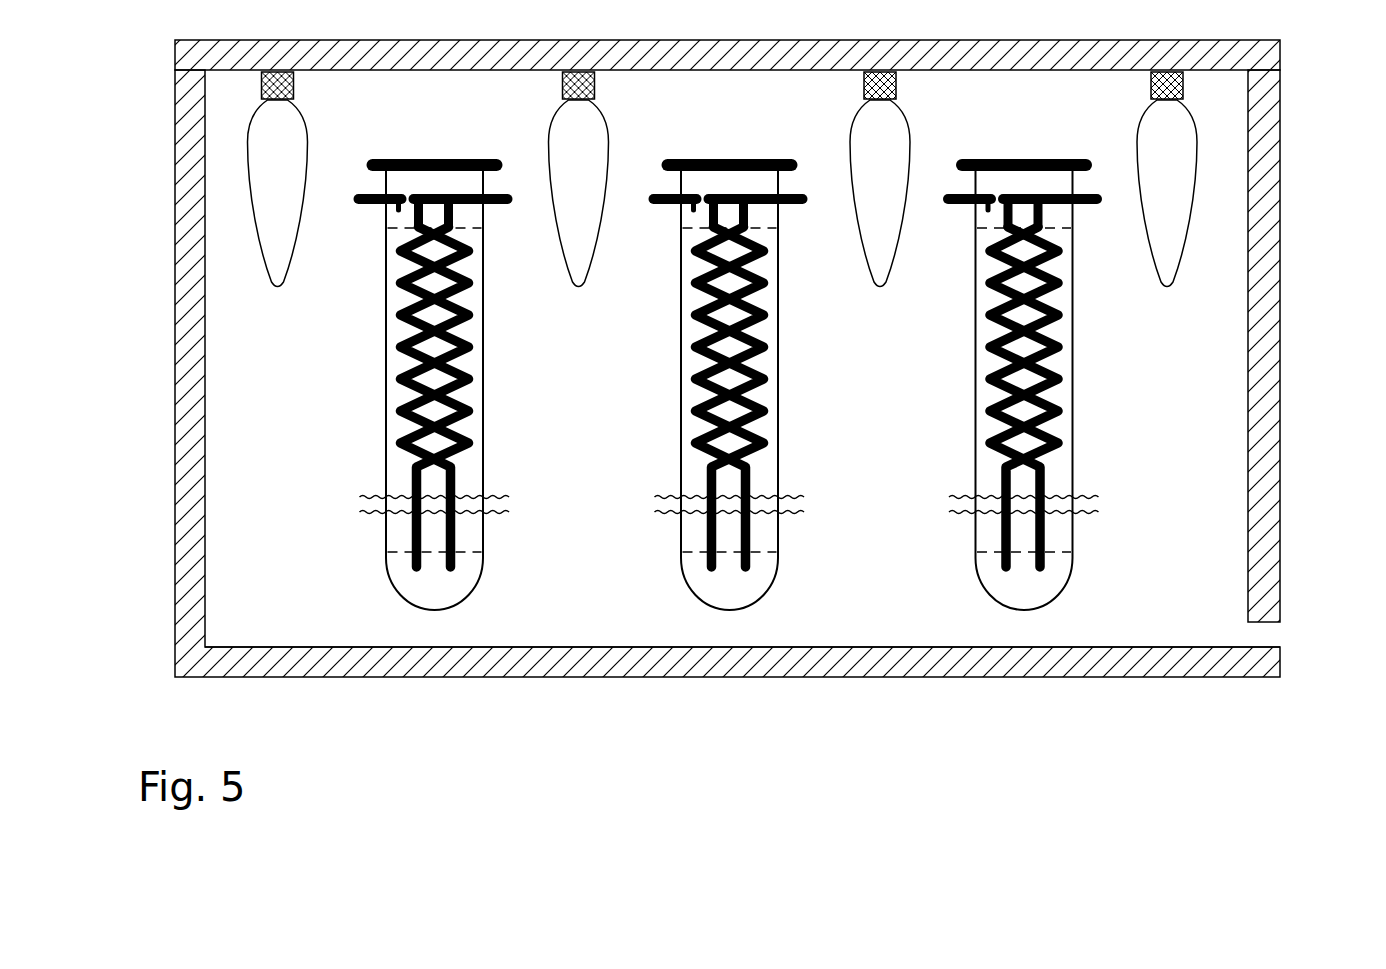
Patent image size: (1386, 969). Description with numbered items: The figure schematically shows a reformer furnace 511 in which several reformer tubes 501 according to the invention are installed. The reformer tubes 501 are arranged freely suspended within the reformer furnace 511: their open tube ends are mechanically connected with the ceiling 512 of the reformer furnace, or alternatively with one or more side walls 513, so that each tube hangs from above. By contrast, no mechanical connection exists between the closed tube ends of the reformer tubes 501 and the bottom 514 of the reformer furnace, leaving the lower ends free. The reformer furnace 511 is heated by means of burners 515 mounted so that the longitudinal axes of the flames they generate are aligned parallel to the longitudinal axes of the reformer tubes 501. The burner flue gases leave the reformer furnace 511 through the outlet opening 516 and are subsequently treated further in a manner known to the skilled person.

The reformer tube 501 is at (722, 391).
The reformer furnace 511 is at (764, 411).
The ceiling 512 is at (458, 70).
The side wall 513 is at (205, 602).
The bottom 514 is at (1217, 648).
The burner 515 is at (723, 179).
The outlet opening 516 is at (1270, 638).